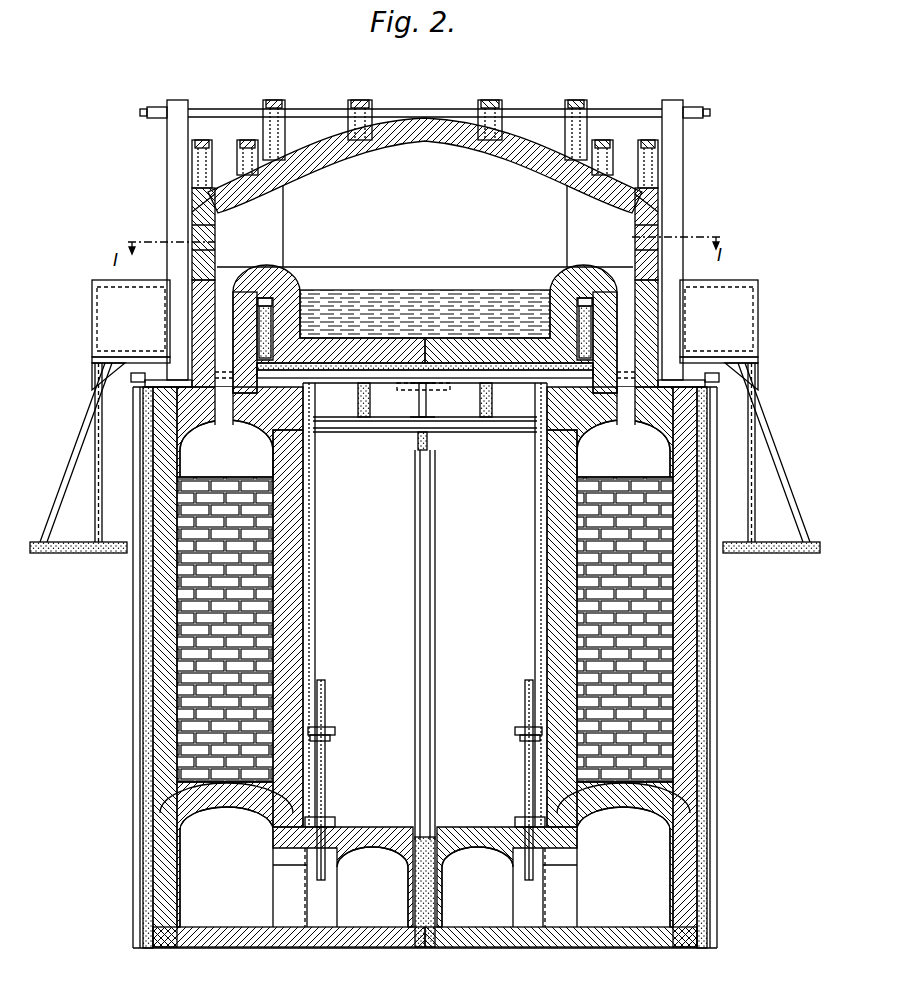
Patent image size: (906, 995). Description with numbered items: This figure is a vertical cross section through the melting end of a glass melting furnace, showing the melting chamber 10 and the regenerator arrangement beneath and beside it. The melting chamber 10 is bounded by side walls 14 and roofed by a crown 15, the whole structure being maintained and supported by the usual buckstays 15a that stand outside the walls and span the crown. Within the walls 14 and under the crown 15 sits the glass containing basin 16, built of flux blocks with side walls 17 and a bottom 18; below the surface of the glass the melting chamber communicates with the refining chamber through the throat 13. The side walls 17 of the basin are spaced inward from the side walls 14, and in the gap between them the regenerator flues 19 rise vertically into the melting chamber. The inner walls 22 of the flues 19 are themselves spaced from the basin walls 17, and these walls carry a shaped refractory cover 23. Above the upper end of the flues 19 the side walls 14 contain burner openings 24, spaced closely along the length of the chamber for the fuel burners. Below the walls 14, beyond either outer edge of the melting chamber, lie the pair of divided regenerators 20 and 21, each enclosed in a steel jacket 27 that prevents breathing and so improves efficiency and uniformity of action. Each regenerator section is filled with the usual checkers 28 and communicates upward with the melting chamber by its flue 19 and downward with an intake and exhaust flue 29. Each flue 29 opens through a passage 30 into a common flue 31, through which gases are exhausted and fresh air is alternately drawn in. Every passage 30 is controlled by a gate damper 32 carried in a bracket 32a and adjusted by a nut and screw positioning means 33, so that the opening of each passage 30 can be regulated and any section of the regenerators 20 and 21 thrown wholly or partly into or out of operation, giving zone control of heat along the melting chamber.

The melting chamber 10 is at (425, 236).
The throat 13 is at (403, 392).
The side walls 14 is at (200, 312).
The crown 15 is at (417, 137).
The buckstays 15a is at (178, 101).
The glass containing basin 16 is at (403, 305).
The side walls of basin 17 is at (313, 297).
The bottom of basin 18 is at (510, 357).
The regenerator flues 19 is at (230, 273).
The regenerator 20 is at (256, 615).
The regenerator 21 is at (579, 603).
The inner walls of flue 22 is at (235, 327).
The refractory cover 23 is at (287, 268).
The burner openings 24 is at (212, 243).
The steel jacket 27 is at (147, 617).
The checkers 28 is at (183, 667).
The intake and exhaust flue 29 is at (425, 867).
The passage 30 is at (425, 887).
The common flue 31 is at (425, 887).
The gate damper 32 is at (330, 866).
The bracket 32a is at (327, 783).
The nut and screw positioning means 33 is at (333, 729).